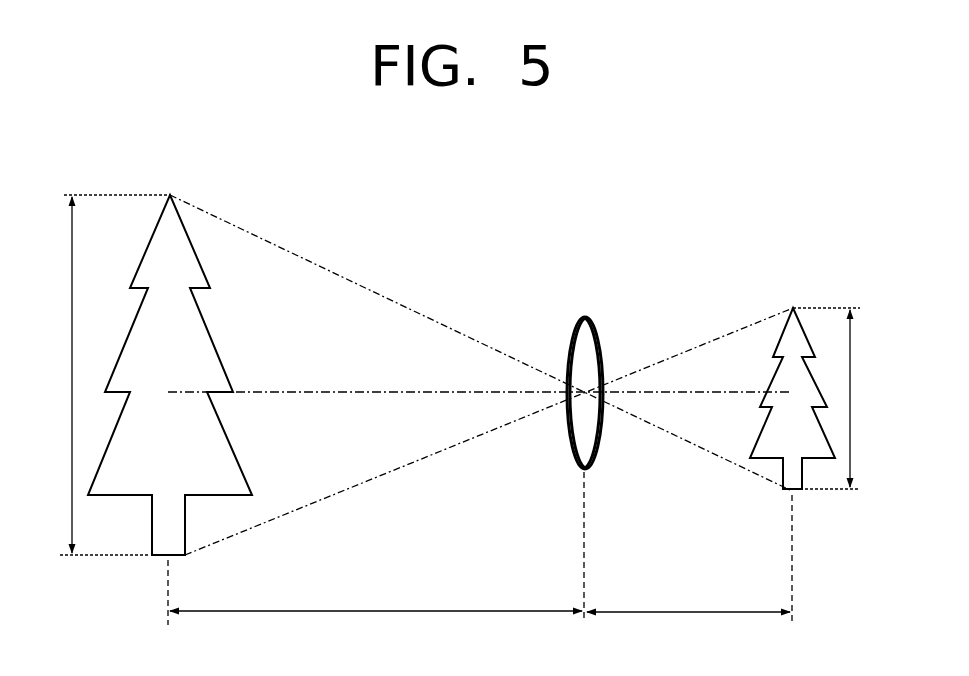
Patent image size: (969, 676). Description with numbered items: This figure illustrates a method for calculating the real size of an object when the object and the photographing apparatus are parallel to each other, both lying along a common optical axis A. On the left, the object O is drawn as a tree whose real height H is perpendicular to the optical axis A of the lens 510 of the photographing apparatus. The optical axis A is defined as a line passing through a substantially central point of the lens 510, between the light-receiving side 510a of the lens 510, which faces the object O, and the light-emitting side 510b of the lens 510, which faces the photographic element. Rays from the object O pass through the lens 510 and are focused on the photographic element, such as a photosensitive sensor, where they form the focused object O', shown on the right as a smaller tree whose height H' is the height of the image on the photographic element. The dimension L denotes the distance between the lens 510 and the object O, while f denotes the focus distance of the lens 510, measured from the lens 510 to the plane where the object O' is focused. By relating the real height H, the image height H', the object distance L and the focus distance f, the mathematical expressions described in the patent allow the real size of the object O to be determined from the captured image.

The object O is at (170, 363).
The object focused on photographic element O' is at (792, 377).
The lens 510 is at (586, 318).
The light-receiving side of lens 510a is at (568, 350).
The light-emitting side of lens 510b is at (602, 350).
The optical axis A is at (422, 392).
The height of object H is at (109, 375).
The height of focused object H' is at (835, 398).
The distance between lens and object L is at (376, 598).
The focus distance of lens f is at (688, 598).